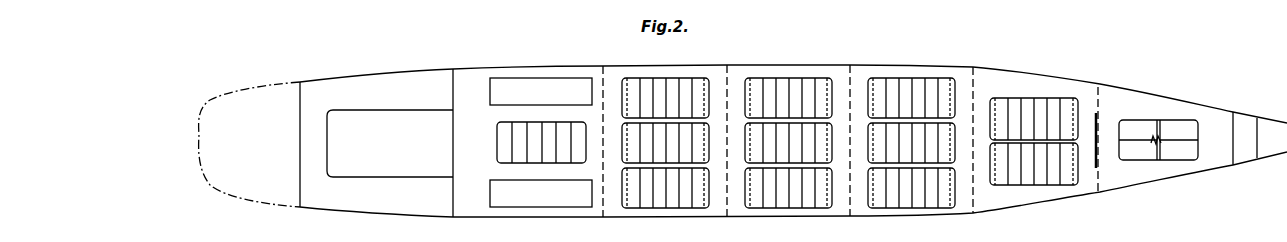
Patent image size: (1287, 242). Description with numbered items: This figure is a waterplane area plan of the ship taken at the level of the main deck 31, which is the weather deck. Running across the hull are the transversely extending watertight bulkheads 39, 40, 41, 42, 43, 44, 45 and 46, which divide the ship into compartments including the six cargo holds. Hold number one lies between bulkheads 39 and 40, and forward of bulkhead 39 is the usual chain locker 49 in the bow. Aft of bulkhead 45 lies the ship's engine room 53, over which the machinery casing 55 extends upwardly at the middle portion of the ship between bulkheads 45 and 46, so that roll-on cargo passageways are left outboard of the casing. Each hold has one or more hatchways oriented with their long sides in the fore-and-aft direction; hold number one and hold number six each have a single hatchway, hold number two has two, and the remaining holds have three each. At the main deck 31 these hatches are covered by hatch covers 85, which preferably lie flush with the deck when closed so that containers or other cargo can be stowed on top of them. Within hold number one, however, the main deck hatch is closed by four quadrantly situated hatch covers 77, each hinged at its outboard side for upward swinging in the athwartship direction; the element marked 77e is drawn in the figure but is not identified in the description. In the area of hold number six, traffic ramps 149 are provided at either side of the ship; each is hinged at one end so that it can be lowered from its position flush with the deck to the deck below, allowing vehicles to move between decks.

The main deck 31 is at (1143, 90).
The watertight bulkhead 39 is at (1233, 141).
The watertight bulkhead 40 is at (1097, 90).
The watertight bulkhead 41 is at (973, 72).
The watertight bulkhead 42 is at (850, 72).
The watertight bulkhead 43 is at (727, 75).
The watertight bulkhead 44 is at (603, 75).
The watertight bulkhead 45 is at (453, 100).
The watertight bulkhead 46 is at (300, 102).
The chain locker 49 is at (1247, 138).
The engine room 53 is at (394, 152).
The machinery casing 55 is at (395, 110).
The hatch covers 77 is at (1145, 138).
The lavatory partition connector 77e is at (1155, 148).
The hatch covers 85 is at (525, 153).
The traffic ramps 149 is at (551, 101).